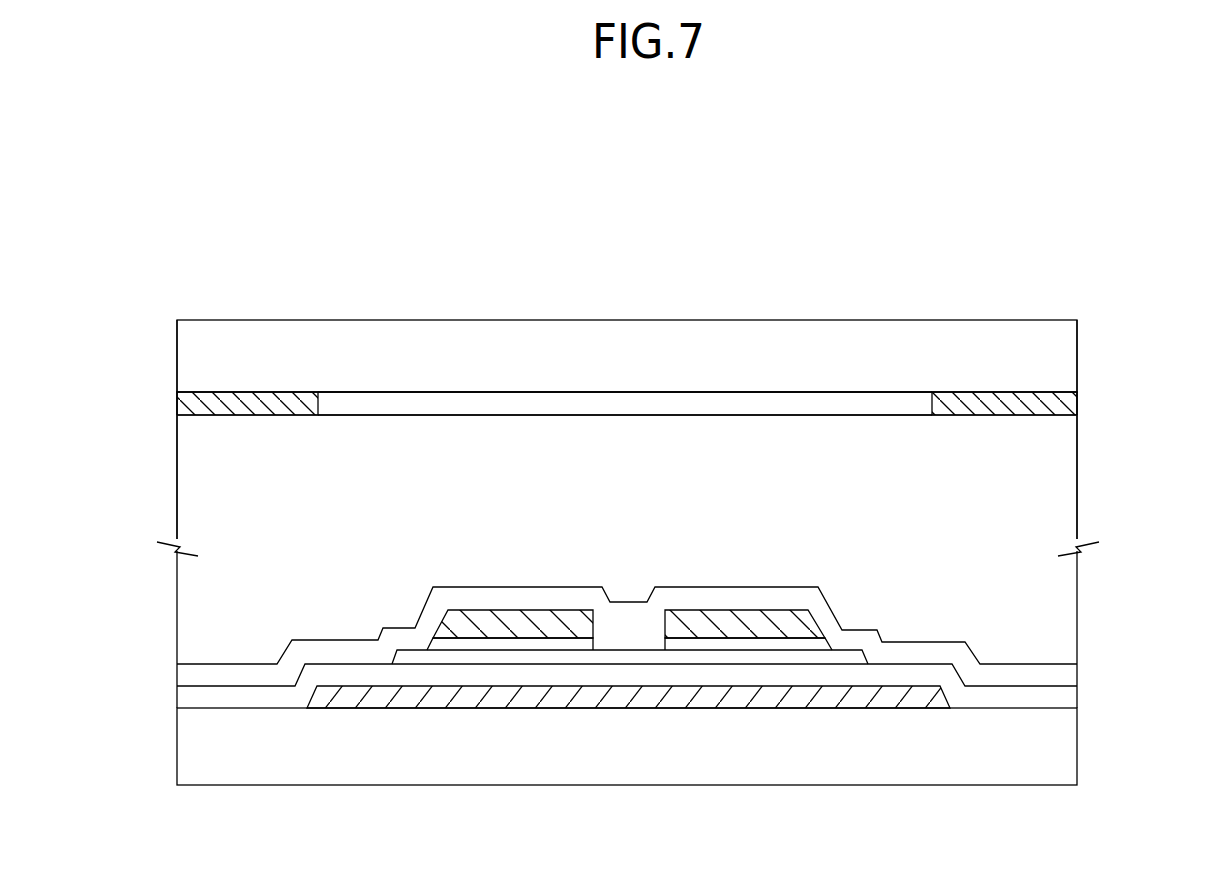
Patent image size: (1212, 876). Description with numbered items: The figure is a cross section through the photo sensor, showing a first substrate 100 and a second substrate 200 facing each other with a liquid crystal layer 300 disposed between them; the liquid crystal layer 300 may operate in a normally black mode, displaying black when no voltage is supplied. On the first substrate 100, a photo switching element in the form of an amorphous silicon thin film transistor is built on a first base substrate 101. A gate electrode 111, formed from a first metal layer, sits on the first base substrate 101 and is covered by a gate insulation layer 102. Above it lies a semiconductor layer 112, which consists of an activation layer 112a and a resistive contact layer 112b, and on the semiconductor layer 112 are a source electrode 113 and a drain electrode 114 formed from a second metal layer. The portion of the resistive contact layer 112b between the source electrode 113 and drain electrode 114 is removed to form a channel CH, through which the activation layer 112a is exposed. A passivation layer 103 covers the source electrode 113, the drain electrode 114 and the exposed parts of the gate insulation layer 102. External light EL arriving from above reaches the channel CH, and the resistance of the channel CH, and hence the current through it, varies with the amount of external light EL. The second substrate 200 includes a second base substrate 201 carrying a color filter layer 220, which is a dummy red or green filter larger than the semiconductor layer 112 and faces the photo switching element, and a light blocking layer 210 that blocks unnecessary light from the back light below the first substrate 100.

The first substrate 100 is at (624, 731).
The first base substrate 101 is at (1067, 742).
The gate insulation layer 102 is at (1067, 700).
The passivation layer 103 is at (1067, 674).
The gate electrode 111 is at (695, 698).
The semiconductor layer 112 is at (630, 757).
The activation layer 112a is at (558, 655).
The resistive contact layer 112b is at (682, 645).
The source electrode 113 is at (505, 630).
The drain electrode 114 is at (728, 632).
The second substrate 200 is at (621, 335).
The second base substrate 201 is at (1066, 359).
The light blocking layer 210 is at (1068, 399).
The color filter layer 220 is at (876, 403).
The liquid crystal layer 300 is at (143, 657).
The external light EL is at (623, 258).
The channel CH is at (629, 622).